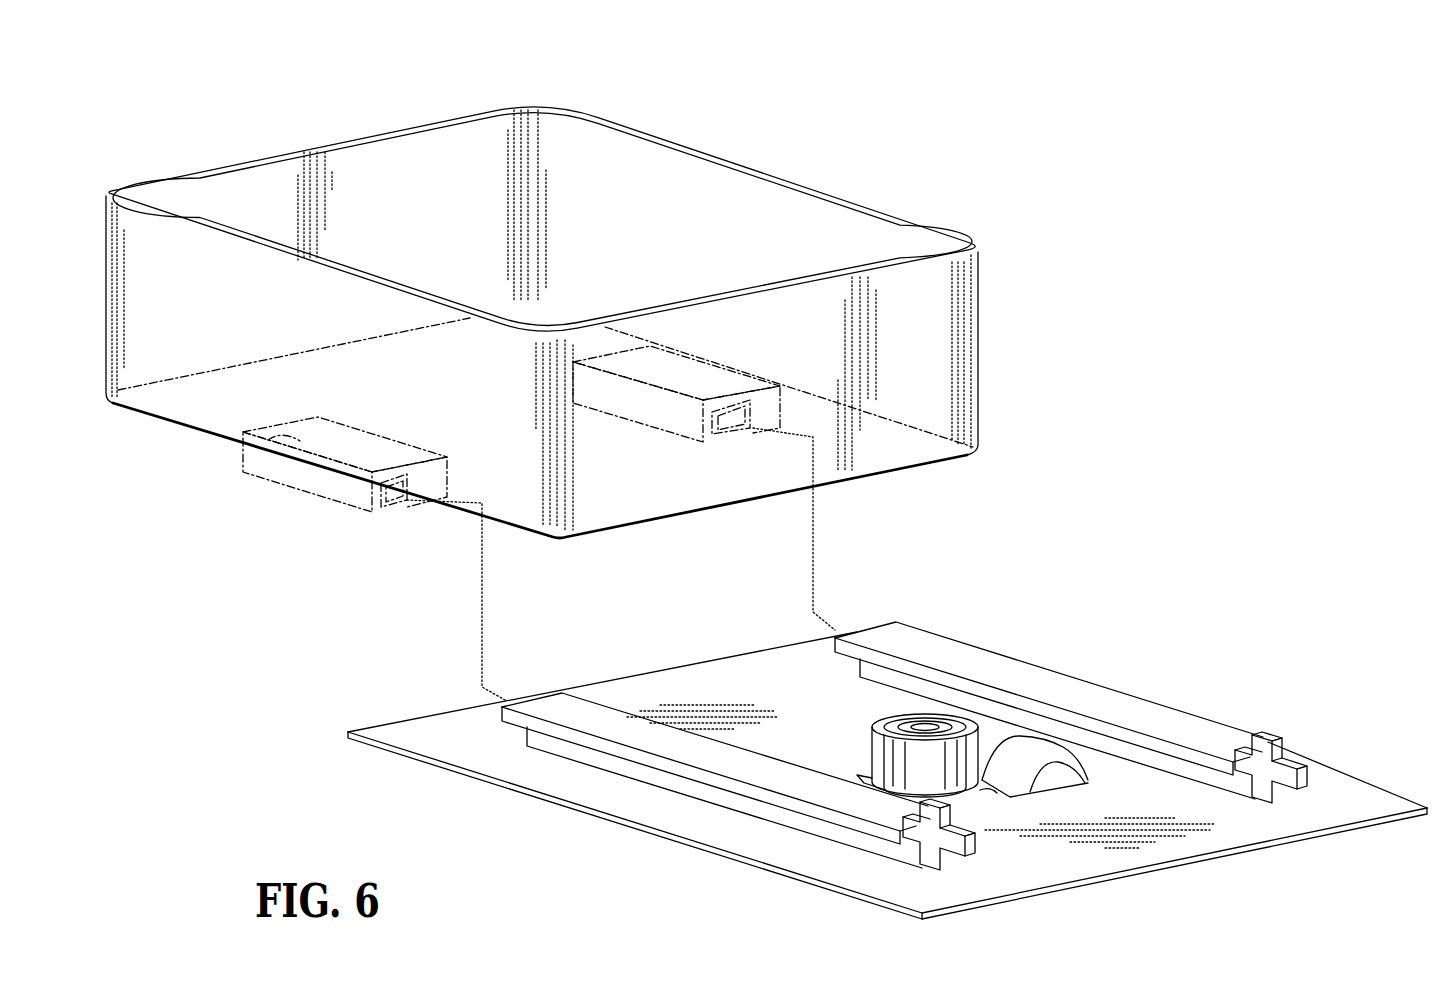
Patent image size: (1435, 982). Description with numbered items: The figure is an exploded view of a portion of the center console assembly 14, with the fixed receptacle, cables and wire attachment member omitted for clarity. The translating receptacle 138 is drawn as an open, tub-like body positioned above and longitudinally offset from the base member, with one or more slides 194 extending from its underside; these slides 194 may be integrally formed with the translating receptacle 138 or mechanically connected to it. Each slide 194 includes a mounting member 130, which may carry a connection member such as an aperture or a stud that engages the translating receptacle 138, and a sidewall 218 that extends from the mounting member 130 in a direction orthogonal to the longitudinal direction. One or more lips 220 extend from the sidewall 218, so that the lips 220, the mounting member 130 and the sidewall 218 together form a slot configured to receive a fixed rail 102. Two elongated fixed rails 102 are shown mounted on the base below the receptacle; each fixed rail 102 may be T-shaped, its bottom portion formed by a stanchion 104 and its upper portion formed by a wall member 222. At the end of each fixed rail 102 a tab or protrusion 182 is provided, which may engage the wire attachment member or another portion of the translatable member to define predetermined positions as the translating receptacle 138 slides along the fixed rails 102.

The center console assembly 14 is at (948, 142).
The translating receptacle 138 is at (313, 143).
The mounting member 130 is at (238, 447).
The slide 194 is at (278, 472).
The sidewall 218 is at (340, 493).
The lip 220 is at (395, 505).
The fixed rail 102 is at (625, 750).
The wall member 222 is at (738, 765).
The protrusion 182 is at (918, 817).
The stanchion 104 is at (793, 818).